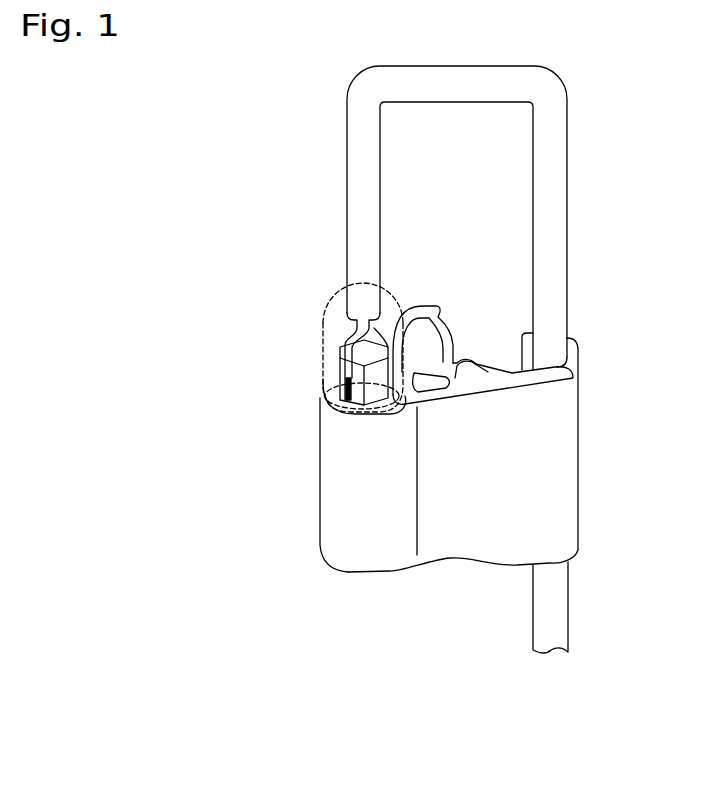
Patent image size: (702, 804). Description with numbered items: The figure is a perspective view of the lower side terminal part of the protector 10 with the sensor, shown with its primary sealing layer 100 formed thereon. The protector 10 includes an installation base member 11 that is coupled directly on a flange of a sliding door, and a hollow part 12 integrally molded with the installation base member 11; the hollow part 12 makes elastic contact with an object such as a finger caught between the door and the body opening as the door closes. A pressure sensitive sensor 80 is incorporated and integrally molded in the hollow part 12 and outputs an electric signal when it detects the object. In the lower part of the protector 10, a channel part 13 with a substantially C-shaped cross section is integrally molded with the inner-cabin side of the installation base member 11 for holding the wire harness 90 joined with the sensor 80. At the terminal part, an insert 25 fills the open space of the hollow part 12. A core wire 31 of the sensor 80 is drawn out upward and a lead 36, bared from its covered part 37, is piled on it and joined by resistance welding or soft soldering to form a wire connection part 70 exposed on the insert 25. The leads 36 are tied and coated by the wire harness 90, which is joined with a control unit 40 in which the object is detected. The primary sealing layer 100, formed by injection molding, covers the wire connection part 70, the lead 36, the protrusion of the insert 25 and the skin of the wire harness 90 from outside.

The protector with the sensor 10 is at (433, 403).
The installation base member 11 is at (553, 487).
The hollow part 12 is at (387, 558).
The channel part 13 is at (573, 352).
The insert 25 is at (325, 303).
The core wire 31 is at (350, 415).
The lead 36 is at (335, 392).
The covered part 37 is at (336, 358).
The control unit 40 is at (551, 660).
The wire connection part 70 is at (340, 384).
The pressure sensitive sensor 80 is at (333, 520).
The wire harness 90 is at (553, 173).
The primary sealing layer 100 is at (322, 328).